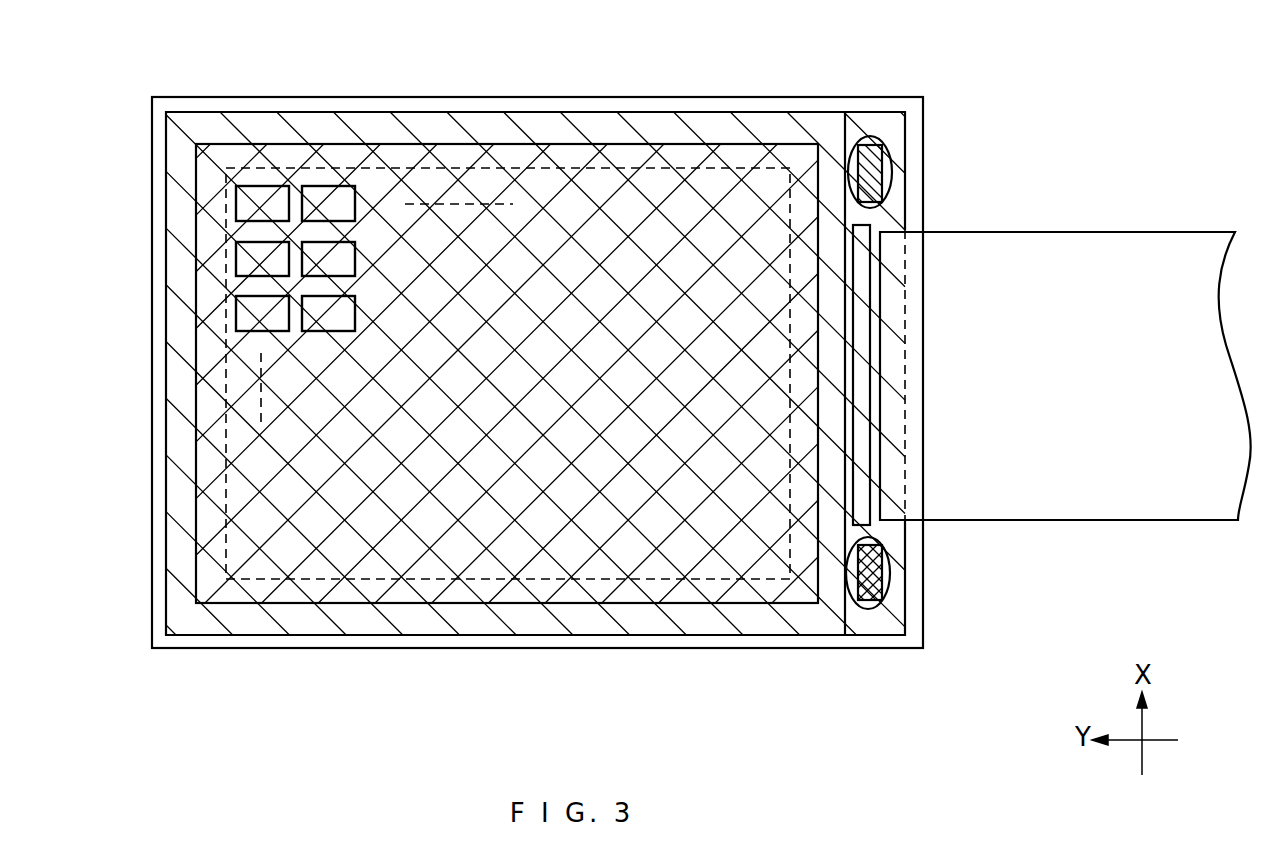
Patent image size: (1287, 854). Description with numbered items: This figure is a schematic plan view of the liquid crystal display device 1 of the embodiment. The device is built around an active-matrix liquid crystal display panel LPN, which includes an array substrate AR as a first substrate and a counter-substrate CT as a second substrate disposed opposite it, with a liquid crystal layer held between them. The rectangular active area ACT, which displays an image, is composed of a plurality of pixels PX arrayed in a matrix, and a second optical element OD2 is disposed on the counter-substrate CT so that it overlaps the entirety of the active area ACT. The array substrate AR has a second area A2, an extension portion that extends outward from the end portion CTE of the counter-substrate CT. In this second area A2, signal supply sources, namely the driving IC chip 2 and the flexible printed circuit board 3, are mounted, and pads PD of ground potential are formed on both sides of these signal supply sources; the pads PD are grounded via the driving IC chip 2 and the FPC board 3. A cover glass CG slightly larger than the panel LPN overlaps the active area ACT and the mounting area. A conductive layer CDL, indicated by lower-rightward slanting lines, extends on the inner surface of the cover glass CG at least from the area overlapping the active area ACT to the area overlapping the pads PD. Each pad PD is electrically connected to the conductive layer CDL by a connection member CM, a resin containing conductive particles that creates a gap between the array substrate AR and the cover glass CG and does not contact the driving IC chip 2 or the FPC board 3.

The liquid crystal display device 1 is at (946, 92).
The driving IC chip 2 is at (862, 226).
The flexible printed circuit (FPC) board 3 is at (1097, 231).
The pixels PX is at (265, 186).
The conductive layer CDL is at (434, 128).
The second optical element OD2 is at (630, 148).
The connection member CM is at (868, 138).
The second area A2 is at (910, 150).
The pad PD is at (882, 180).
The end portion of the counter-substrate CTE is at (862, 577).
The array substrate AR is at (894, 608).
The counter-substrate CT is at (786, 622).
The active area ACT is at (570, 592).
The liquid crystal display panel LPN is at (873, 652).
The cover glass CG is at (150, 650).